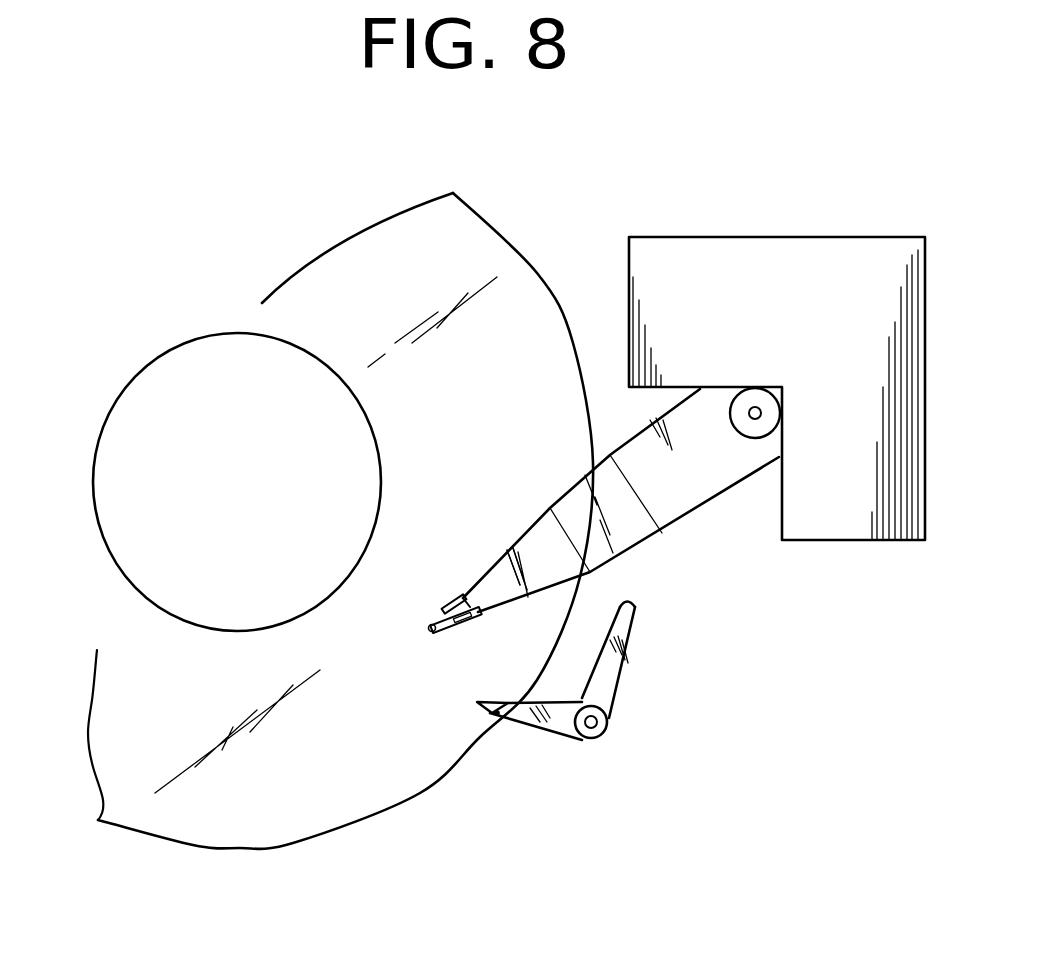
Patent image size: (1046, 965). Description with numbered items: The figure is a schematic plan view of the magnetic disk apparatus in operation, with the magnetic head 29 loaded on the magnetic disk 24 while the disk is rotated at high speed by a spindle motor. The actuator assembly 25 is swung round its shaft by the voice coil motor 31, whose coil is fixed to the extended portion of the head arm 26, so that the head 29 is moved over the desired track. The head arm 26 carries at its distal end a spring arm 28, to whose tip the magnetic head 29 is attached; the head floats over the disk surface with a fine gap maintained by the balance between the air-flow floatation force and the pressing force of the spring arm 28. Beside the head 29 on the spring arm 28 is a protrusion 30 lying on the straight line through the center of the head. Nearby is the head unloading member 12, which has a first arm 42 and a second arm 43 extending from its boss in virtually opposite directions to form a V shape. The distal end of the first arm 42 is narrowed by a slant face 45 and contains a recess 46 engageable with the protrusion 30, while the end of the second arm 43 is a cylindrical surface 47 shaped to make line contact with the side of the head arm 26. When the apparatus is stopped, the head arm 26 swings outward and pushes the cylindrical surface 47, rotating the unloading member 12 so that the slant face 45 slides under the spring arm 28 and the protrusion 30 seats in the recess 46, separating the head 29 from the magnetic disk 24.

The unloading member 12 is at (548, 735).
The magnetic disk 24 is at (372, 252).
The actuator assembly 25 is at (637, 516).
The head arm 26 is at (751, 506).
The spring arm 28 is at (510, 543).
The magnetic head 29 is at (452, 600).
The protrusion 30 is at (427, 633).
The voice coil motor 31 is at (775, 252).
The first arm 42 is at (553, 725).
The second arm 43 is at (653, 657).
The slant face 45 is at (480, 705).
The recess 46 is at (497, 715).
The cylindrical surface 47 is at (638, 595).